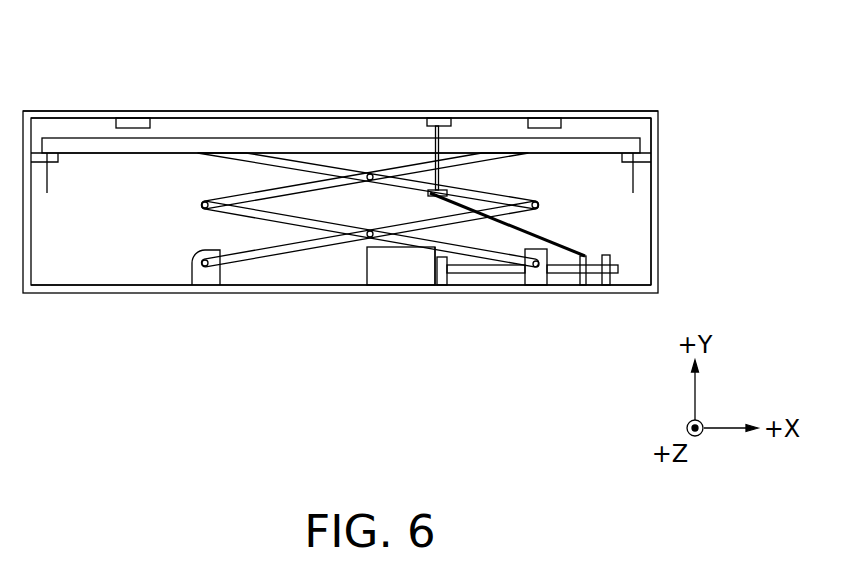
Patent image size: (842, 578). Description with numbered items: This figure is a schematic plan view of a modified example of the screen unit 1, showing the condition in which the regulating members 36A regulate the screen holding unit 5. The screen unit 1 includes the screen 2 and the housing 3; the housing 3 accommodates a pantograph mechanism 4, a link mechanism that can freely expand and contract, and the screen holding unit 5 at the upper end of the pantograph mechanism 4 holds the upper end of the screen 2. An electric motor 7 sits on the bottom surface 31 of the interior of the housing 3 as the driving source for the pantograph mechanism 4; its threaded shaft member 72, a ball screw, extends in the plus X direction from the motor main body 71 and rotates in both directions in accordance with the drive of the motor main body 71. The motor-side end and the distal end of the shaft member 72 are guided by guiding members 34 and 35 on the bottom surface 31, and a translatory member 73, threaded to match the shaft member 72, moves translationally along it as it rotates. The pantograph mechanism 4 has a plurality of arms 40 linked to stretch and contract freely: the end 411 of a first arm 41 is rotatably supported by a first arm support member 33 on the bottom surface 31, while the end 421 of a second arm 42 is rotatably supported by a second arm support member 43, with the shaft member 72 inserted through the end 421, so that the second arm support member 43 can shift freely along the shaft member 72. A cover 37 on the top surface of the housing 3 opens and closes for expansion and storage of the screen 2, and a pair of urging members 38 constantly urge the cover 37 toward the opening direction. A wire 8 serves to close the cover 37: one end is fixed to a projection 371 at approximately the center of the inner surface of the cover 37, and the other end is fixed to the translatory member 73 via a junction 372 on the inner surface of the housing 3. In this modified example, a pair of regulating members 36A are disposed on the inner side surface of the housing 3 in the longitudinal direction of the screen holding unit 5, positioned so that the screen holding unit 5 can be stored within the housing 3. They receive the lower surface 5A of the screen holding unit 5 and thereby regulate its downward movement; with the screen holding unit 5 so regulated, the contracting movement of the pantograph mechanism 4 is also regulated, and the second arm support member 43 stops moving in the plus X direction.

The screen unit 1 is at (690, 80).
The screen 2 is at (636, 172).
The housing 3 is at (688, 212).
The bottom surface 31 is at (84, 280).
The first arm support member 33 is at (193, 268).
The guiding member 34 is at (447, 277).
The guiding member 35 is at (610, 278).
The regulating member 36A is at (606, 155).
The cover 37 is at (640, 113).
The urging member 38 is at (135, 121).
The pantograph mechanism 4 is at (352, 273).
The arms 40 is at (530, 182).
The first arm 41 is at (250, 247).
The end of first arm 411 is at (220, 250).
The second arm 42 is at (293, 226).
The end of second arm 421 is at (507, 263).
The second arm support member 43 is at (526, 277).
The screen holding unit 5 is at (640, 145).
The lower surface 5A is at (569, 156).
The electric motor 7 is at (378, 272).
The motor main body 71 is at (415, 273).
The shaft member 72 is at (590, 257).
The translatory member 73 is at (586, 280).
The wire 8 is at (408, 120).
The projection 371 is at (460, 121).
The junction 372 is at (432, 181).